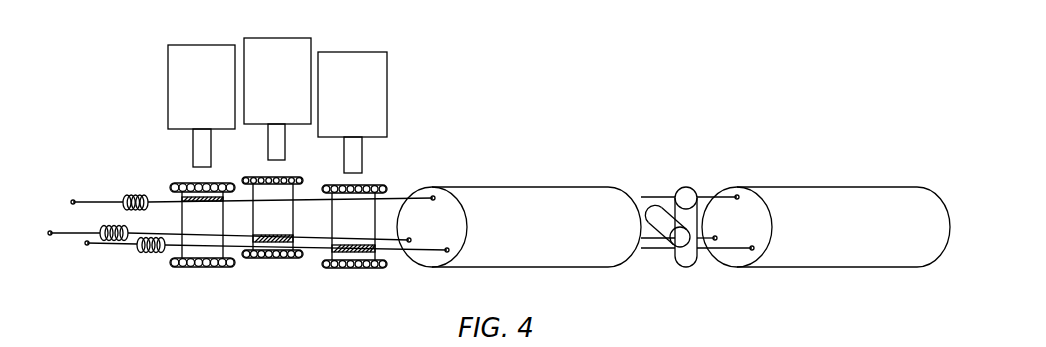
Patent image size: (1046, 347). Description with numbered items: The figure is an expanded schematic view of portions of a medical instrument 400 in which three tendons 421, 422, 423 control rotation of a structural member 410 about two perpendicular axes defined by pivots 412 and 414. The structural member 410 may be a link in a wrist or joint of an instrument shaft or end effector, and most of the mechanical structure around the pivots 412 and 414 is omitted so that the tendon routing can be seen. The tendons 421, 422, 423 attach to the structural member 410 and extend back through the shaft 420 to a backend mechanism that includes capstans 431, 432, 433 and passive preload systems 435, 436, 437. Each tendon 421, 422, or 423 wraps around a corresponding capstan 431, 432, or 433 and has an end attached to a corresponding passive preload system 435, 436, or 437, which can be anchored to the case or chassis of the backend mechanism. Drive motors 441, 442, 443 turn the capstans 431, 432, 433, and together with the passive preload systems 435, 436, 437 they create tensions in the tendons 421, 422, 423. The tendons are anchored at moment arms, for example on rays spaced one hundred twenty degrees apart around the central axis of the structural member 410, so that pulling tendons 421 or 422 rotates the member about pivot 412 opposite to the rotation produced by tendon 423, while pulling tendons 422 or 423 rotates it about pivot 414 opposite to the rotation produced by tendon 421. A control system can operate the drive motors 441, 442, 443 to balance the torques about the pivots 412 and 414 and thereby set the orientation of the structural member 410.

The medical instrument 400 is at (786, 86).
The structural member 410 is at (828, 236).
The pivot 412 is at (687, 195).
The pivot 414 is at (658, 210).
The shaft 420 is at (522, 236).
The tendon 421 is at (403, 197).
The tendon 422 is at (393, 257).
The tendon 423 is at (420, 258).
The capstan 431 is at (184, 237).
The capstan 432 is at (257, 222).
The capstan 433 is at (336, 229).
The passive preload system 435 is at (137, 195).
The passive preload system 436 is at (110, 250).
The passive preload system 437 is at (148, 253).
The drive motor 441 is at (185, 98).
The drive motor 442 is at (261, 91).
The drive motor 443 is at (336, 105).